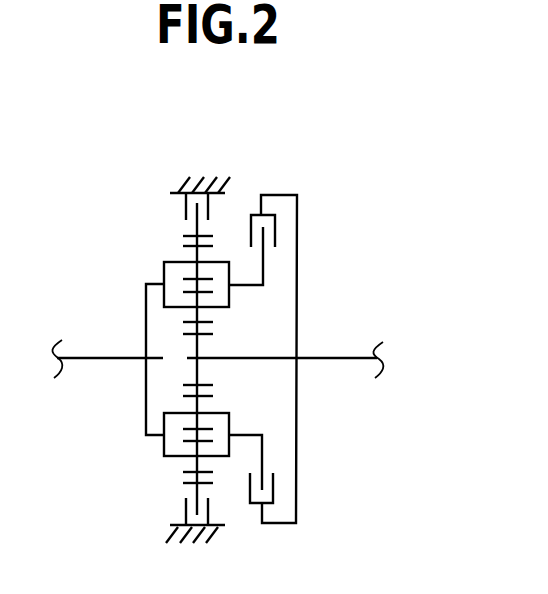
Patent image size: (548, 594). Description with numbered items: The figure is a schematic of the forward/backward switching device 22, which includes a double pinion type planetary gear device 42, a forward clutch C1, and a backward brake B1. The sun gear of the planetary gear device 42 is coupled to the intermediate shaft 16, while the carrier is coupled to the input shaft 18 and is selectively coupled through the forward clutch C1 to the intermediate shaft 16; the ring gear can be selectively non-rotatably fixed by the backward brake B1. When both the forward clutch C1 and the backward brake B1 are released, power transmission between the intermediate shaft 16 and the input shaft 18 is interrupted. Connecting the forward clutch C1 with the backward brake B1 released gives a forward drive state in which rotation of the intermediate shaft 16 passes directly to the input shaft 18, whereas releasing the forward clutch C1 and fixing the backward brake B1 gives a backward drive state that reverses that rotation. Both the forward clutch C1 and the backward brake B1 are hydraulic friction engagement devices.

The forward/backward switching device 22 is at (239, 310).
The double pinion type planetary gear device 42 is at (120, 264).
The input shaft 18 is at (95, 360).
The intermediate shaft 16 is at (343, 360).
The backward brake B1 is at (198, 345).
The forward clutch C1 is at (264, 334).